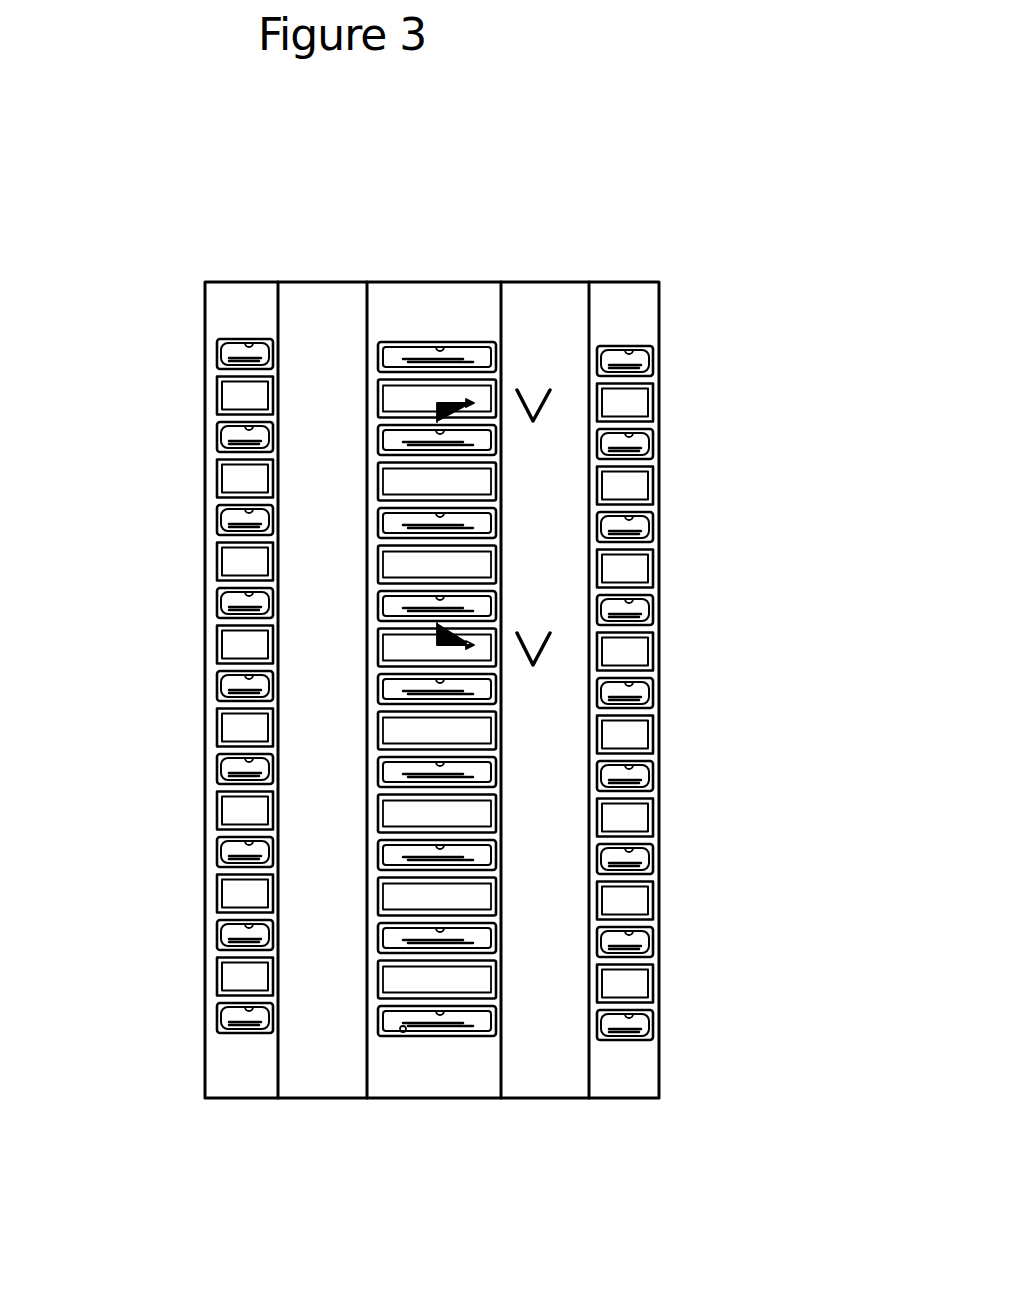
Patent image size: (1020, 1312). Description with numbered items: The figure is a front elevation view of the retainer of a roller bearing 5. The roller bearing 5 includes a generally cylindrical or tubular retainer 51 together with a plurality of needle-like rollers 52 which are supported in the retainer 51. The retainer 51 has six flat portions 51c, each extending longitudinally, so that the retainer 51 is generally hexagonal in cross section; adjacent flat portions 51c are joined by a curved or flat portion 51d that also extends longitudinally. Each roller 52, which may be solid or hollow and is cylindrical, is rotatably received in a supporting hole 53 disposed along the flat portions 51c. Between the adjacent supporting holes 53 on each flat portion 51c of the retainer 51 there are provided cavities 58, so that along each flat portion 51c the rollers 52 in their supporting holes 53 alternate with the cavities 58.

The roller bearing 5 is at (702, 463).
The retainer 51 is at (534, 280).
The flat portion 51c is at (243, 1078).
The curved or flat portion 51d is at (323, 1078).
The roller 52 is at (222, 433).
The supporting hole 53 is at (249, 343).
The cavity 58 is at (262, 397).